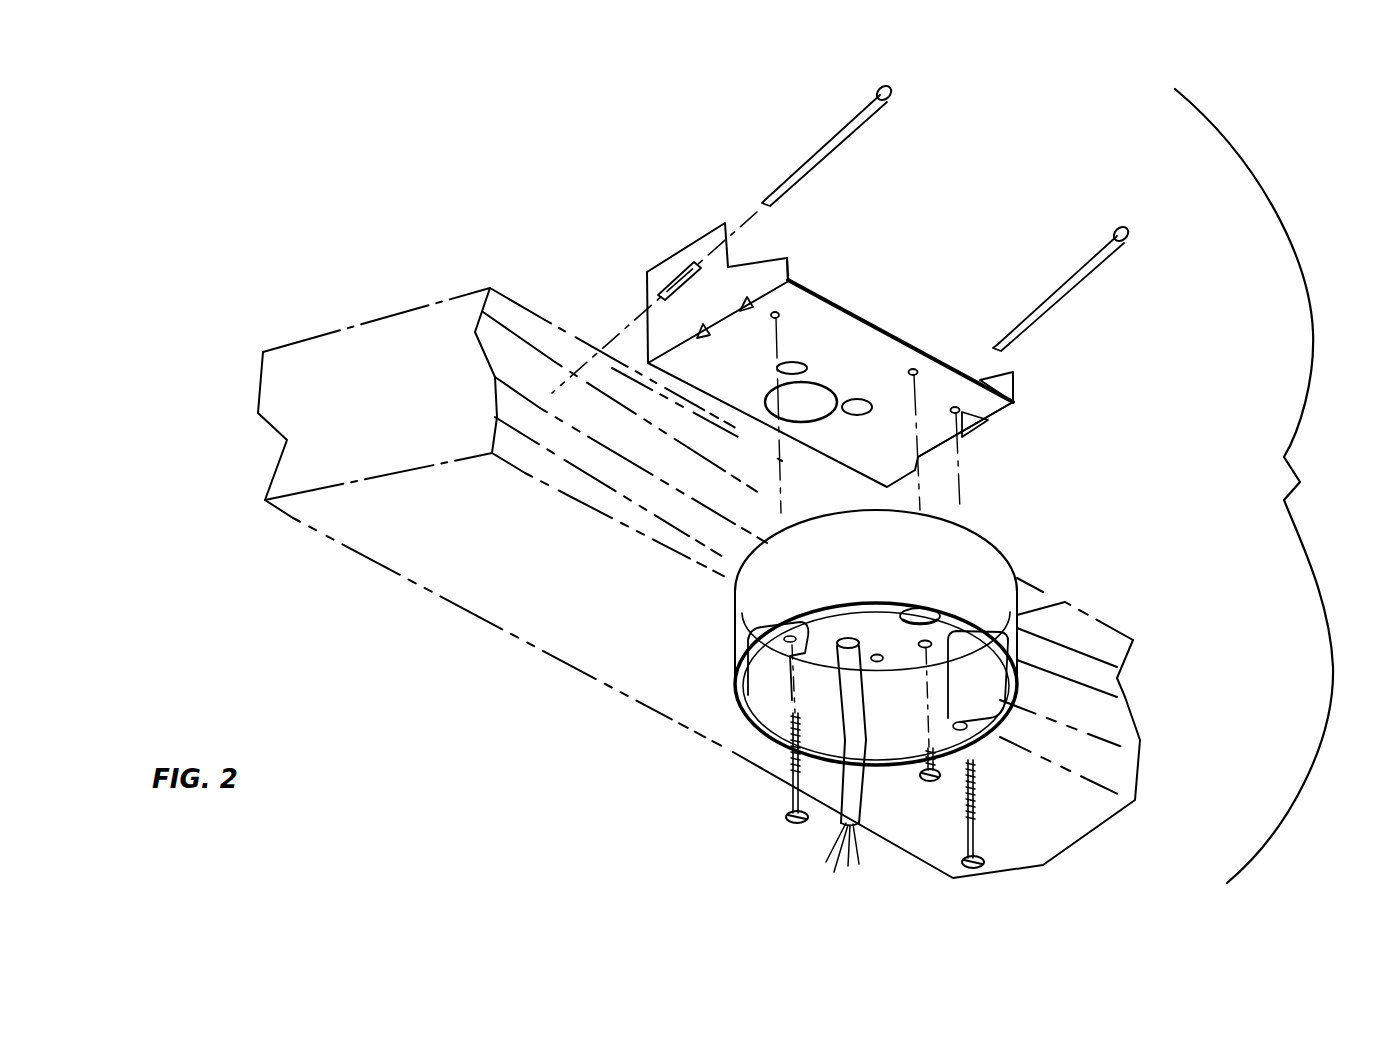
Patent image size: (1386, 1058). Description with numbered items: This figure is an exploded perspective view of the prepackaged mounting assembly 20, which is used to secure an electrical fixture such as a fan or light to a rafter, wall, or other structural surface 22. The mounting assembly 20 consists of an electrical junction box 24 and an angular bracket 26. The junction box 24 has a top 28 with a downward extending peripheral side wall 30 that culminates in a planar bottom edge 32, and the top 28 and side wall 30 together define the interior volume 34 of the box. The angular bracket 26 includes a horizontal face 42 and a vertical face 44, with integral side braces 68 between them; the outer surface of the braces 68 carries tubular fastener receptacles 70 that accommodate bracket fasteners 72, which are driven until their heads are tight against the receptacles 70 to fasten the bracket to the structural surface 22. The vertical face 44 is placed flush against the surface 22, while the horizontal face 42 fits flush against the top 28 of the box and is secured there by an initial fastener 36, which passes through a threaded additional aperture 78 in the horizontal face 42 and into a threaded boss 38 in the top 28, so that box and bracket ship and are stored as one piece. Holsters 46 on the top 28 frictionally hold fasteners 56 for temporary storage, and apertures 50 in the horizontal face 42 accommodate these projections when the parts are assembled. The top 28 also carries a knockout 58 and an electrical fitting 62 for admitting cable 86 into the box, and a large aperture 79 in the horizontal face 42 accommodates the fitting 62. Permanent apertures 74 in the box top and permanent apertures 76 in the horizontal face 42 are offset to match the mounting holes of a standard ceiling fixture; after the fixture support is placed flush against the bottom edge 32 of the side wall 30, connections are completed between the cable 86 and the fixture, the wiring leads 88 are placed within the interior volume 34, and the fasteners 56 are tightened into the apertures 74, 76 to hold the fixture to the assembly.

The prepackaged mounting assembly 20 is at (1258, 486).
The structural surface 22 is at (597, 444).
The electrical junction box 24 is at (1065, 602).
The angular bracket 26 is at (867, 320).
The top 28 is at (1002, 520).
The peripheral side wall 30 is at (861, 562).
The planar bottom edge 32 is at (1045, 707).
The interior volume 34 is at (757, 728).
The initial fastener 36 is at (930, 781).
The threaded boss 38 is at (921, 642).
The horizontal face 42 is at (850, 452).
The vertical face 44 is at (645, 289).
The holsters 46 is at (798, 655).
The apertures 50 is at (858, 398).
The fasteners 56 is at (787, 790).
The knockout 58 is at (926, 610).
The electrical fitting 62 is at (840, 636).
The side braces 68 is at (789, 261).
The tubular fastener receptacles 70 is at (670, 270).
The bracket fasteners 72 is at (890, 86).
The permanent aperture 74 is at (762, 628).
The permanent aperture 76 is at (773, 322).
The additional aperture 78 is at (915, 368).
The large aperture 79 is at (767, 392).
The cable 86 is at (857, 828).
The wiring leads 88 is at (830, 850).